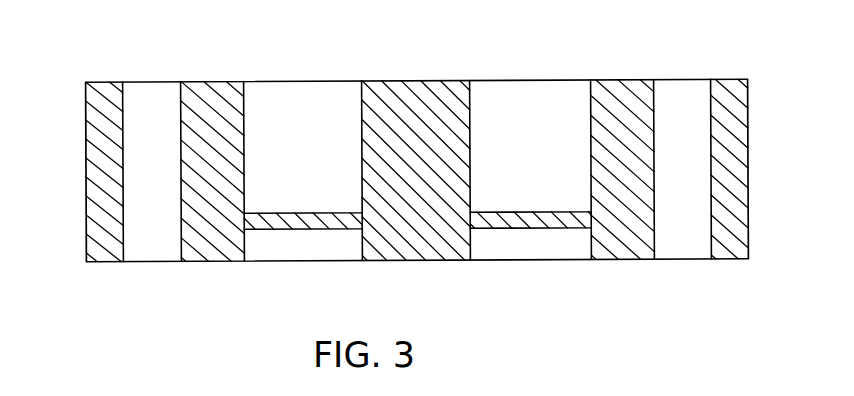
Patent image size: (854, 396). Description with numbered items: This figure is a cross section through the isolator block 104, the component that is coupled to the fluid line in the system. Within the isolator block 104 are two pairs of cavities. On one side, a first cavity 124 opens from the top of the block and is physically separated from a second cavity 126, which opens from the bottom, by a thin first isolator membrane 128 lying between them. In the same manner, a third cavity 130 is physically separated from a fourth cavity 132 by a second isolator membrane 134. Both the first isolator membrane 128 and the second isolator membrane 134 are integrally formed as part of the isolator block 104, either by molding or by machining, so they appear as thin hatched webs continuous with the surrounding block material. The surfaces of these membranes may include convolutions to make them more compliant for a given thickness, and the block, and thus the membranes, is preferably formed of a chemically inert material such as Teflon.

The isolator block 104 is at (75, 82).
The first cavity 124 is at (280, 87).
The first isolator membrane 128 is at (272, 231).
The second cavity 126 is at (312, 253).
The third cavity 130 is at (555, 87).
The second isolator membrane 134 is at (555, 221).
The fourth cavity 132 is at (503, 252).